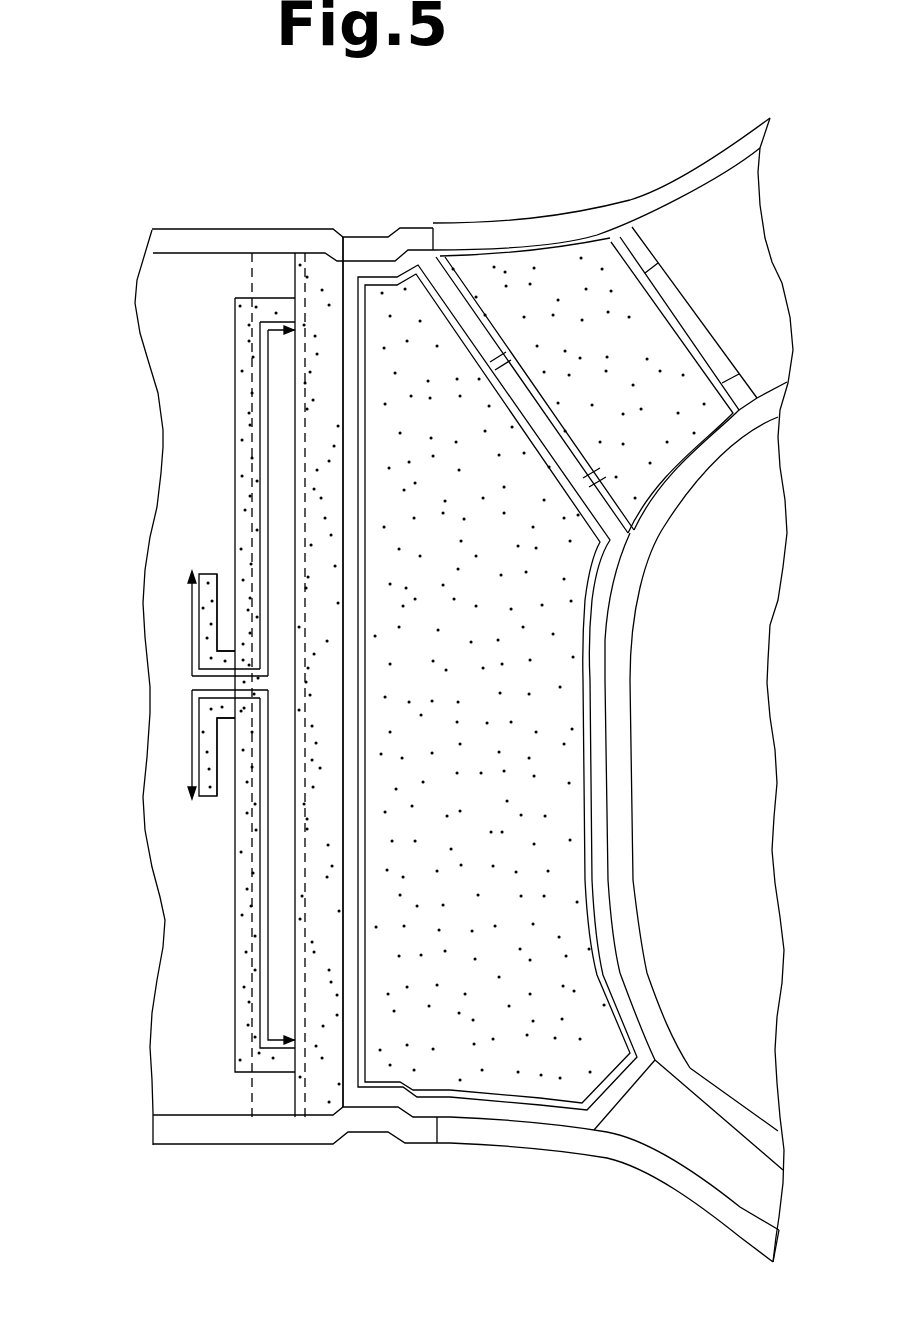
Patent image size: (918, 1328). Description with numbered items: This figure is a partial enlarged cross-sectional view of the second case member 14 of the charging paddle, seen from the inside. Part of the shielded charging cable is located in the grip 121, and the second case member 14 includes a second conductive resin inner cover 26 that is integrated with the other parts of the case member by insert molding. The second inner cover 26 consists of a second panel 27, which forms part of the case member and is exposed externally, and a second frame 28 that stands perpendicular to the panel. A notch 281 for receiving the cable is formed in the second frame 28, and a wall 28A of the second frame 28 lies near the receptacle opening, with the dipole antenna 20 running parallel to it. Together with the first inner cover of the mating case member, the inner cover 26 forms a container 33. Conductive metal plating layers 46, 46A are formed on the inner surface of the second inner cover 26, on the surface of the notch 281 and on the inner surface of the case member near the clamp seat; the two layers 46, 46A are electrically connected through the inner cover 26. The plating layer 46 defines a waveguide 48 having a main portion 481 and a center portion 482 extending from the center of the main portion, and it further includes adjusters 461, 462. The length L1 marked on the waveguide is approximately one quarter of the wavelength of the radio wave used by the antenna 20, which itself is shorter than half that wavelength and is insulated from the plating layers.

The second case member 14 is at (603, 1147).
The grip 121 is at (738, 143).
The dipole antenna 20 is at (245, 272).
The second conductive resin inner cover 26 is at (567, 684).
The second panel 27 is at (540, 762).
The second frame 28 is at (600, 813).
The wall 28A is at (350, 313).
The notch 281 is at (510, 372).
The container 33 is at (632, 1091).
The conductive metal plating layer 46 is at (323, 1097).
The conductive metal plating layer 46A is at (657, 452).
The waveguide 48 is at (62, 658).
The main portion 481 is at (280, 746).
The center portion 482 is at (228, 683).
The adjuster 461 is at (210, 797).
The adjuster 462 is at (210, 572).
The length L1 is at (267, 403).